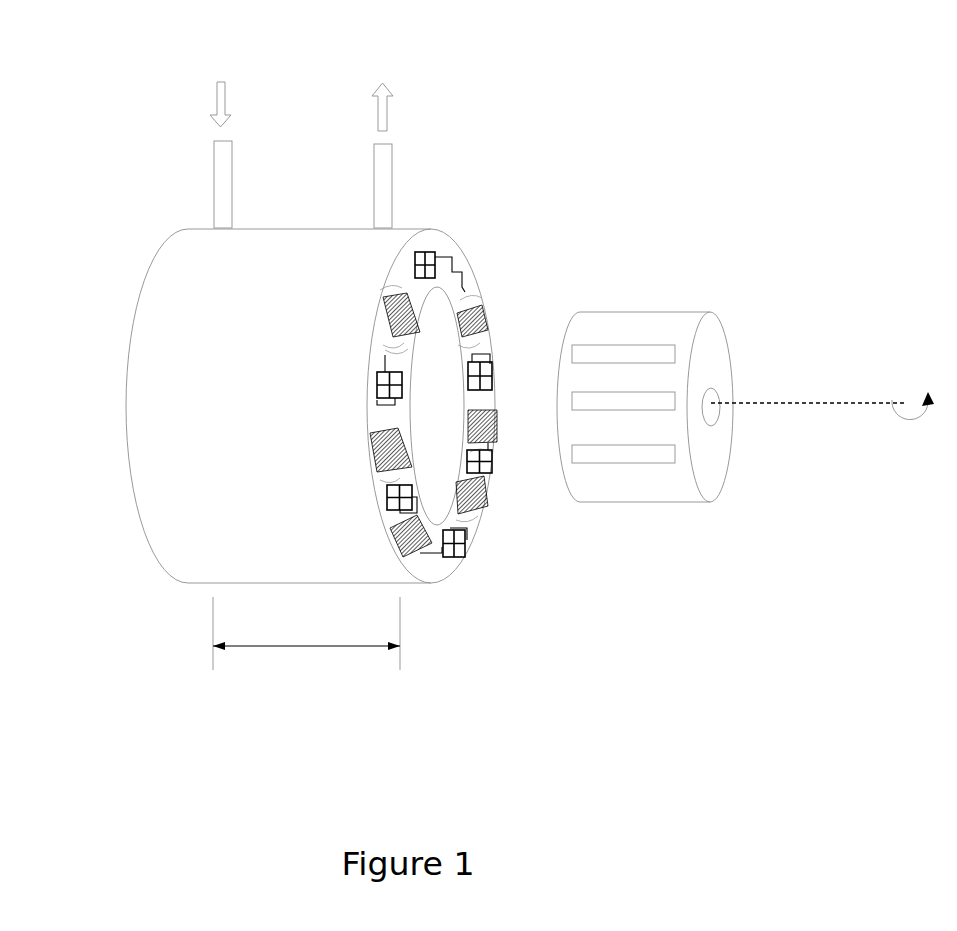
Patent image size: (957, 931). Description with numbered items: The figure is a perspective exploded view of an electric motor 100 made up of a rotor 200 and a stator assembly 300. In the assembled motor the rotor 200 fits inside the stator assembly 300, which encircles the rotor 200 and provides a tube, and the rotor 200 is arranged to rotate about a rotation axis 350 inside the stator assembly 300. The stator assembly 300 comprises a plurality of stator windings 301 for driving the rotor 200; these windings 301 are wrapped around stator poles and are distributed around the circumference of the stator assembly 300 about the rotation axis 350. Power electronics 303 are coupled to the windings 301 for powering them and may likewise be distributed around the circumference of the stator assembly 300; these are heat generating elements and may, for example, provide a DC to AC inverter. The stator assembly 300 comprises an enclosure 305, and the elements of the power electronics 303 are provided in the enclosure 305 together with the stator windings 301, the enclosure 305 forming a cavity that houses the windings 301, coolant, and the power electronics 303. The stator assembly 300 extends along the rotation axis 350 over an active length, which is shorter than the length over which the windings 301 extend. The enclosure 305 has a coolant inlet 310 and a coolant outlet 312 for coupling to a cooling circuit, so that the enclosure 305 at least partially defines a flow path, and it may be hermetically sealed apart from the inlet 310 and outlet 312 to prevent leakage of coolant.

The electric motor 100 is at (566, 86).
The rotor 200 is at (664, 545).
The stator assembly 300 is at (104, 616).
The stator windings 301 is at (492, 410).
The power electronics 303 is at (432, 262).
The enclosure 305 is at (195, 585).
The coolant inlet 310 is at (224, 185).
The coolant outlet 312 is at (383, 187).
The rotation axis 350 is at (865, 403).